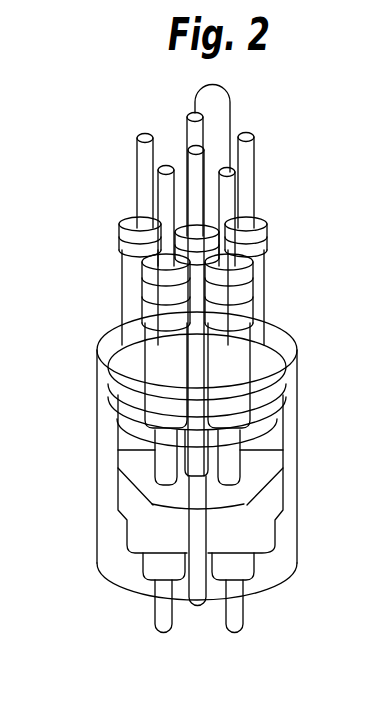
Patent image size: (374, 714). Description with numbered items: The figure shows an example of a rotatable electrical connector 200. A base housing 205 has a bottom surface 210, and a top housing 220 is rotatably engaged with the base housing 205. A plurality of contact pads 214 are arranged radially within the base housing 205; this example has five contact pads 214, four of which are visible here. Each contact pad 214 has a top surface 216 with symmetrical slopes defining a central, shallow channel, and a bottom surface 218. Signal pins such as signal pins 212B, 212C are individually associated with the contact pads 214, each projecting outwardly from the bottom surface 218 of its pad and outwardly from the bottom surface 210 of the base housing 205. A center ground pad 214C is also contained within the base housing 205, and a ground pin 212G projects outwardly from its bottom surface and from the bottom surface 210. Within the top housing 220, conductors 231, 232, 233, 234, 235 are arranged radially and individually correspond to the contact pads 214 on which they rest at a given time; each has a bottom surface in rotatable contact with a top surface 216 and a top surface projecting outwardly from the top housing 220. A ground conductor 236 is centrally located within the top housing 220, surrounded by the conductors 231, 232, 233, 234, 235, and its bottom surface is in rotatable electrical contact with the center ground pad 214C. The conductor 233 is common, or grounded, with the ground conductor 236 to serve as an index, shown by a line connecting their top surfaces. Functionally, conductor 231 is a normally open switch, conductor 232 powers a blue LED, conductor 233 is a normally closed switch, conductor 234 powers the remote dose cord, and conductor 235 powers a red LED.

The rotatable electrical connector 200 is at (268, 84).
The base housing 205 is at (300, 492).
The bottom surface 210 is at (295, 556).
The signal pin 212B is at (155, 620).
The signal pin 212C is at (245, 612).
The ground pin 212G is at (196, 606).
The contact pads 214 is at (122, 440).
The center ground pad 214C is at (108, 412).
The top surface 216 is at (183, 470).
The bottom surface 218 is at (127, 565).
The top housing 220 is at (272, 315).
The conductor 231 is at (137, 160).
The conductor 232 is at (160, 208).
The conductor 233 is at (238, 208).
The conductor 234 is at (254, 160).
The conductor 235 is at (188, 115).
The ground conductor 236 is at (188, 147).